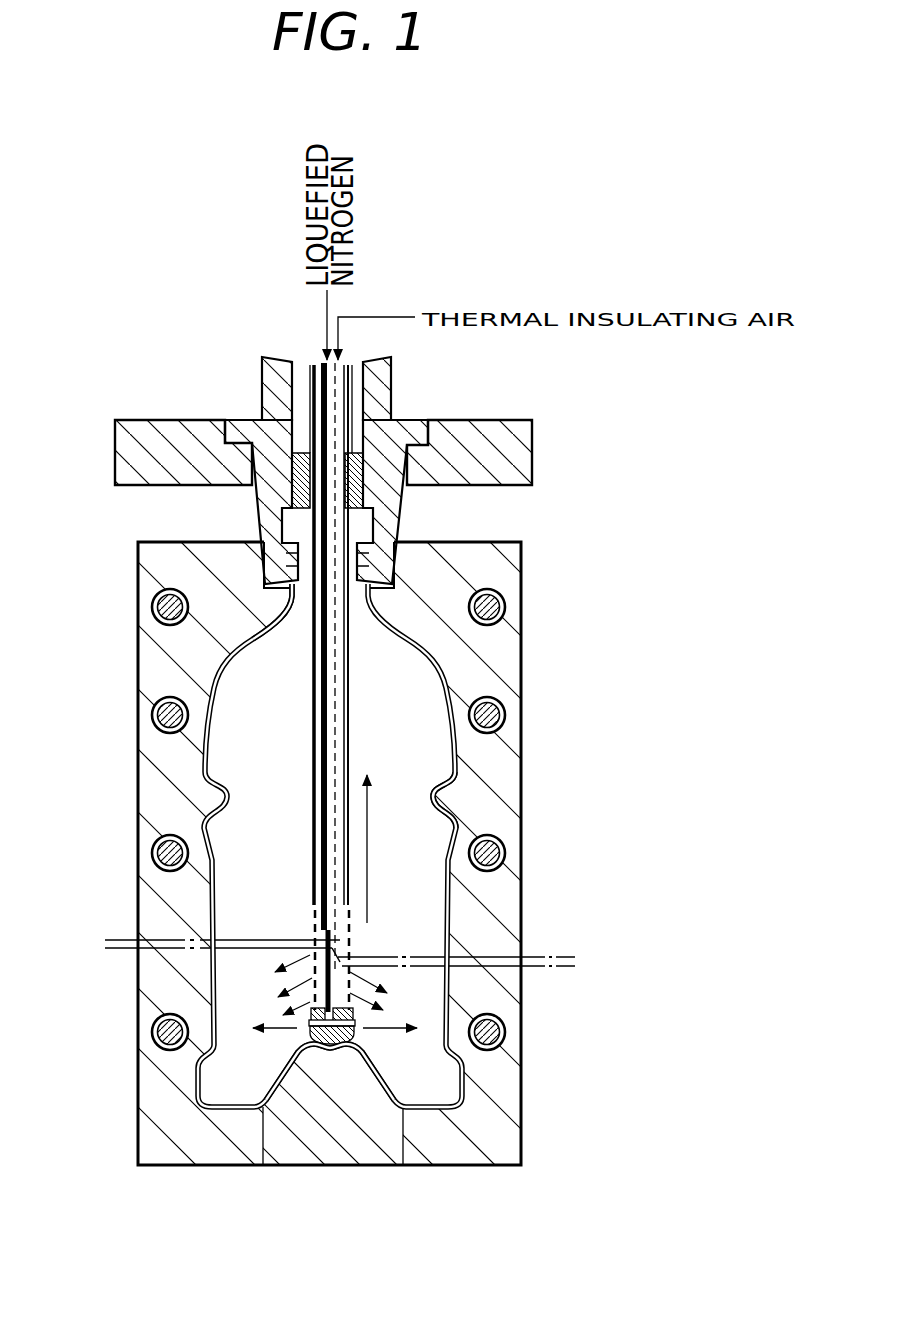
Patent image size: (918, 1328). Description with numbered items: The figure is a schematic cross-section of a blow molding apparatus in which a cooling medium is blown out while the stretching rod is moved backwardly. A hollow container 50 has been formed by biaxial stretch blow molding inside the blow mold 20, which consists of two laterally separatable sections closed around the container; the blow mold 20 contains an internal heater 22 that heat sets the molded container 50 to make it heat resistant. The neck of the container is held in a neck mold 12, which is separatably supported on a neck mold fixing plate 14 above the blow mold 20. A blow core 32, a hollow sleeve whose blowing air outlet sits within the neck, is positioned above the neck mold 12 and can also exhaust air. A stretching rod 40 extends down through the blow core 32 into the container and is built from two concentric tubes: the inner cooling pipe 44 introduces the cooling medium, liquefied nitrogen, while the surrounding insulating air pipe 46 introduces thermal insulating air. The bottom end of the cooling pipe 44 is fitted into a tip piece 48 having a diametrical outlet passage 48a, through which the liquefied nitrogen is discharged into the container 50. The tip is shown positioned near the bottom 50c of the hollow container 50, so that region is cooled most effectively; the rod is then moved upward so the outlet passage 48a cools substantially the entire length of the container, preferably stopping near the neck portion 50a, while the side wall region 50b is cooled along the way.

The neck mold 12 is at (405, 525).
The neck mold fixing plate 14 is at (527, 458).
The blow mold 20 is at (170, 1112).
The internal heater 22 is at (500, 598).
The blow core 32 is at (383, 388).
The stretching rod 40 is at (358, 718).
The cooling pipe 44 is at (340, 742).
The insulating air pipe 46 is at (352, 770).
The tip piece 48 is at (330, 1045).
The outlet passage 48a is at (370, 1025).
The hollow container 50 is at (200, 790).
The neck portion 50a is at (296, 604).
The bottle waist portion 50b is at (462, 822).
The bottom 50c is at (384, 1052).